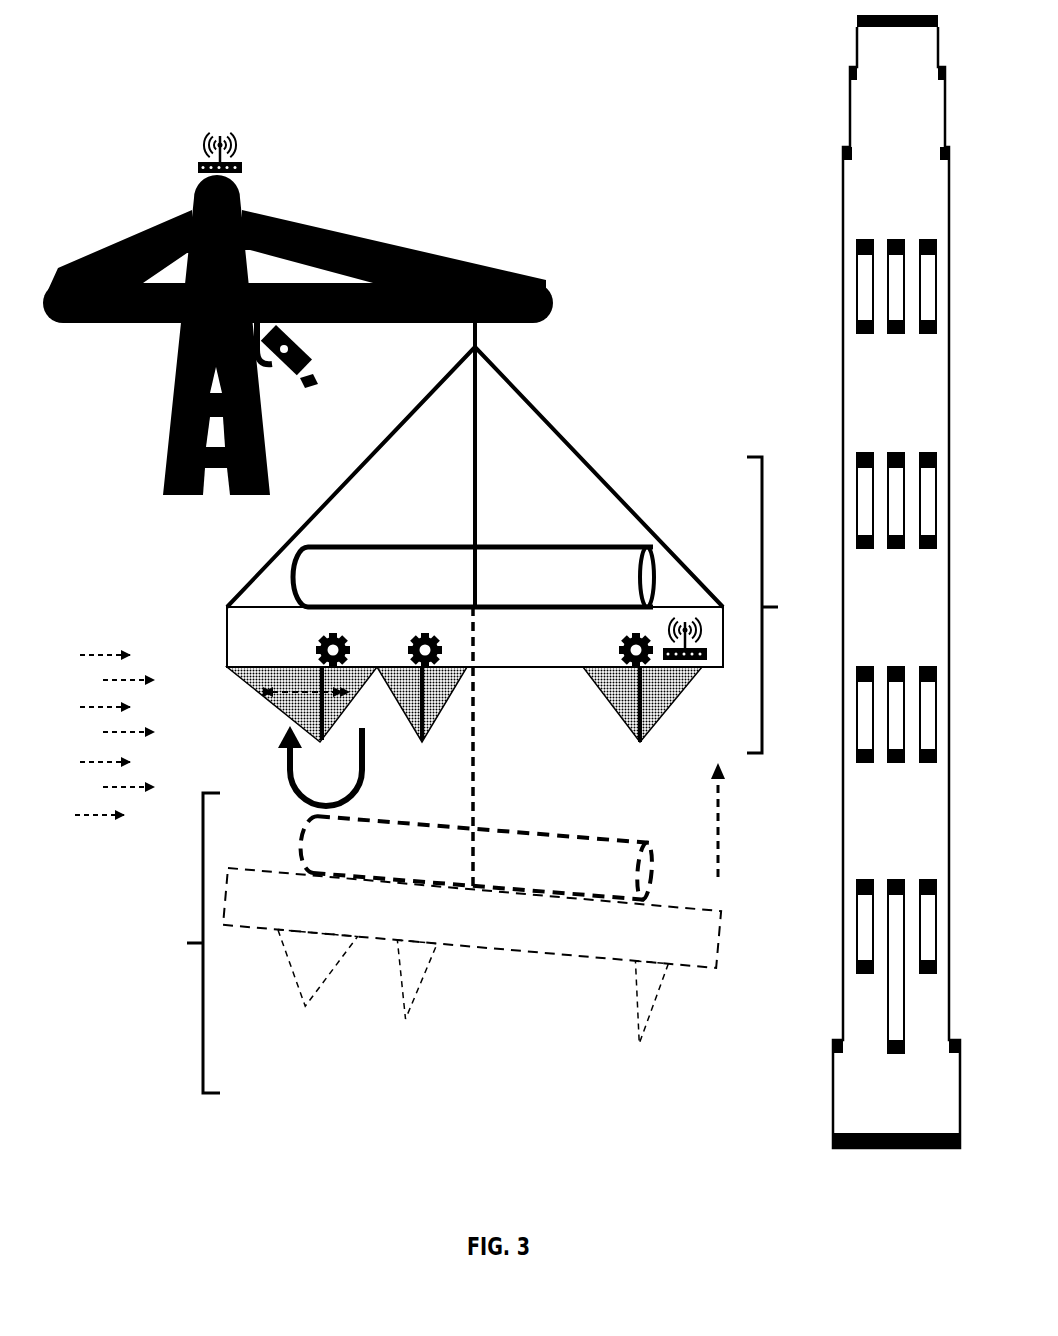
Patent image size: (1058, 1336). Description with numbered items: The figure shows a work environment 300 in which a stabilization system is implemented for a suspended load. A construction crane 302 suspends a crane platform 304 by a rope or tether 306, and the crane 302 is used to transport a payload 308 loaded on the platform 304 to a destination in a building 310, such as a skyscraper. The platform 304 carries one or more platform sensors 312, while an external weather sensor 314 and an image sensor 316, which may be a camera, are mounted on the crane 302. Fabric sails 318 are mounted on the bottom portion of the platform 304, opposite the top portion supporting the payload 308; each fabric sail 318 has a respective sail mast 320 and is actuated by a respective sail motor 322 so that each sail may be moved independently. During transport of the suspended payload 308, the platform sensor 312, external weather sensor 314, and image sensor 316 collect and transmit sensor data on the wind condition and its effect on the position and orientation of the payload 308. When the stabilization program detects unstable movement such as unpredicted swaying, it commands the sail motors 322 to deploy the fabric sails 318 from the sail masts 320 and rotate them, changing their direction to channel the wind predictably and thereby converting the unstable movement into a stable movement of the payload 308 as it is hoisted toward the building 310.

The work environment 300 is at (352, 74).
The construction crane 302 is at (134, 232).
The crane platform 304 is at (542, 656).
The rope or tether 306 is at (565, 418).
The payload 308 is at (405, 589).
The building 310 is at (905, 201).
The platform sensor 312 is at (708, 664).
The external weather sensor 314 is at (192, 158).
The image sensor 316 is at (316, 356).
The fabric sail 318 is at (592, 690).
The sail mast 320 is at (636, 710).
The sail motor 322 is at (606, 652).